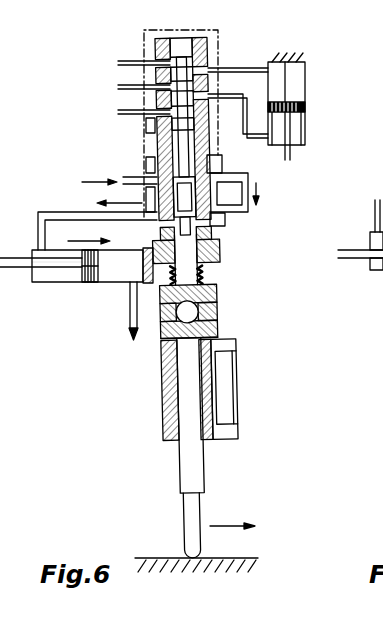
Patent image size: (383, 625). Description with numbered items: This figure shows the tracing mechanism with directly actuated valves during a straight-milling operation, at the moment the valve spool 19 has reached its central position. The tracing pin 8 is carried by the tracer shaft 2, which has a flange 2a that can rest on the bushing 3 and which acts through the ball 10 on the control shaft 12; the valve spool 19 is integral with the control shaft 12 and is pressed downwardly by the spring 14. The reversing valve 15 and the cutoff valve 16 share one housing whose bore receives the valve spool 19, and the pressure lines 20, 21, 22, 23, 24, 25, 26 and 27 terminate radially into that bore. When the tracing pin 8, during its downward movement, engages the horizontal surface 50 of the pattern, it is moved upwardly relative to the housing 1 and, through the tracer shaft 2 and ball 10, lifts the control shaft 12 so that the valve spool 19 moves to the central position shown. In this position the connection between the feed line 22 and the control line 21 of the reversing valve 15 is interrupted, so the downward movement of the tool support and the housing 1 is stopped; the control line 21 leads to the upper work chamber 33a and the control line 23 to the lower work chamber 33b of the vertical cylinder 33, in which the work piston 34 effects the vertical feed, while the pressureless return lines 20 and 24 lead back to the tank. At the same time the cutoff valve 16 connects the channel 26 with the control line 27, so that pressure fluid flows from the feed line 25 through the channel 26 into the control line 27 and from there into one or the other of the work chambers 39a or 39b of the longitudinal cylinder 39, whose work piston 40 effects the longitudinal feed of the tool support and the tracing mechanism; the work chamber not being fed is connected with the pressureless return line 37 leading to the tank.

The housing 1 is at (222, 245).
The tracer shaft 2 is at (195, 467).
The flange 2a is at (163, 333).
The bushing 3 is at (165, 429).
The tracing pin 8 is at (196, 511).
The ball 10 is at (190, 312).
The control shaft 12 is at (220, 262).
The spring 14 is at (215, 283).
The reversing valve 15 is at (224, 31).
The cutoff valve 16 is at (232, 221).
The valve spool 19 is at (157, 146).
The pressureless return line 20 is at (118, 63).
The control line 21 is at (243, 68).
The feed line 22 is at (118, 87).
The control line 23 is at (240, 102).
The pressureless return line 24 is at (118, 112).
The feed line 25 is at (131, 176).
The channel 26 is at (241, 189).
The control line 27 is at (63, 212).
The vertical cylinder 33 is at (312, 71).
The upper work chamber 33a is at (288, 75).
The lower work chamber 33b is at (297, 132).
The work piston 34 is at (303, 107).
The pressureless return line 37 is at (135, 294).
The longitudinal cylinder 39 is at (47, 290).
The work chamber 39a is at (72, 276).
The work chamber 39b is at (125, 258).
The work piston 40 is at (88, 283).
The horizontal surface 50 is at (243, 557).